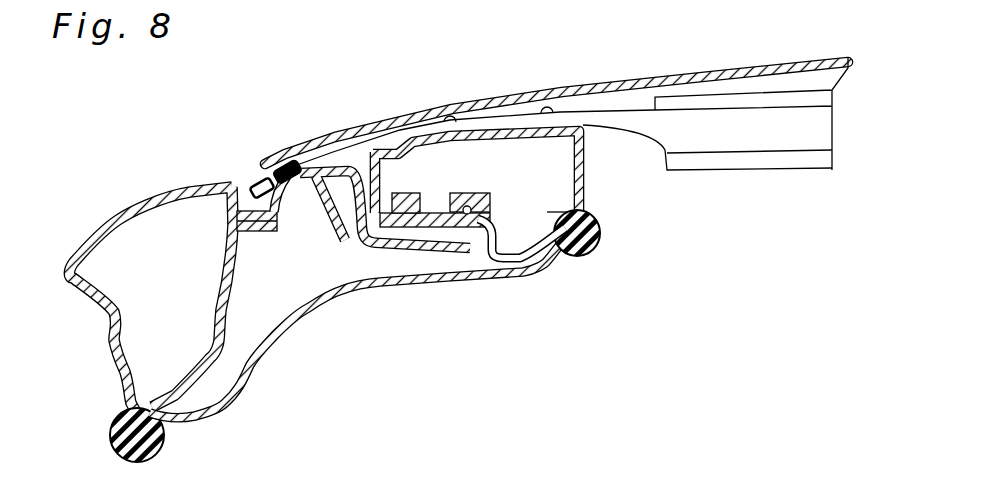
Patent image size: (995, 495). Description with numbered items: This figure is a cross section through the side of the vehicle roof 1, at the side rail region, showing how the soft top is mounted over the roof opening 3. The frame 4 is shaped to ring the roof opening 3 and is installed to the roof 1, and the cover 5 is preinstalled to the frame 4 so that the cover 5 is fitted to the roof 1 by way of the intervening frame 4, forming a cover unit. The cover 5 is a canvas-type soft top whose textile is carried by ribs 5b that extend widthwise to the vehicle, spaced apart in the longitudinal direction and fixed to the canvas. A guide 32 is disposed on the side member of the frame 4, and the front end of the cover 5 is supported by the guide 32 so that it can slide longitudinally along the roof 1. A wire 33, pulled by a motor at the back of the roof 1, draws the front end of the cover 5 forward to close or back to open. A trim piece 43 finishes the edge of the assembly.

The vehicle roof 1 is at (150, 197).
The cover 5 is at (604, 83).
The ribs 5b is at (737, 160).
The roof opening 3 is at (653, 203).
The frame 4 is at (480, 260).
The guide 32 is at (470, 200).
The wire 33 is at (508, 228).
The trim piece 43 is at (263, 352).